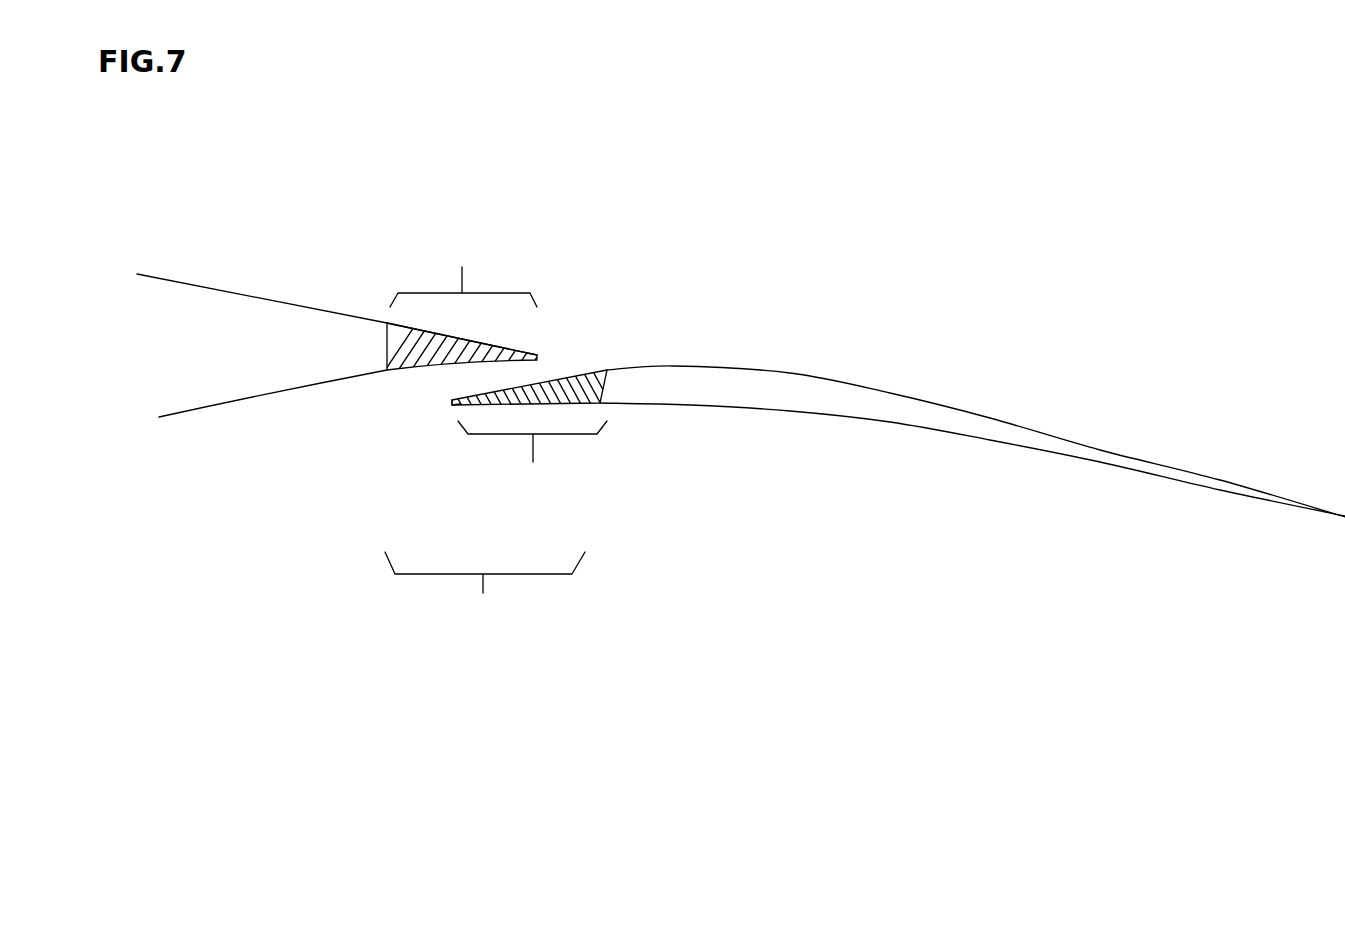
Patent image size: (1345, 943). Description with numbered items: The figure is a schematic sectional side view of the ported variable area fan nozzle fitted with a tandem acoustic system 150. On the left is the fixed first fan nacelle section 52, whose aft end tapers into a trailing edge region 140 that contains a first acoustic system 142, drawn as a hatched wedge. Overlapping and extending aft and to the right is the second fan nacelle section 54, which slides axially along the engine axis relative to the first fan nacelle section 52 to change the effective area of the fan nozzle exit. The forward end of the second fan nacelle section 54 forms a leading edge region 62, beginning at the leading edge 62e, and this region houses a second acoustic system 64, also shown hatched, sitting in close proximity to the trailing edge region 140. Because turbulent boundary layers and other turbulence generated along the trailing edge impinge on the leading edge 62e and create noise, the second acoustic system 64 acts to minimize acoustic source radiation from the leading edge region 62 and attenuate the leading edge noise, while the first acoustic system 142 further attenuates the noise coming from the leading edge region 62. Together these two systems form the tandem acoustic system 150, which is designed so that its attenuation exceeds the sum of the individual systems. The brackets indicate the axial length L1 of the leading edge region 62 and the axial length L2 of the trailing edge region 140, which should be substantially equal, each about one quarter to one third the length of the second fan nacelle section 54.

The first fan nacelle section 52 is at (183, 281).
The second fan nacelle section 54 is at (760, 427).
The leading edge region 62 is at (539, 386).
The leading edge 62e is at (450, 409).
The second acoustic system 64 is at (549, 405).
The trailing edge region 140 is at (428, 325).
The first acoustic system 142 is at (467, 338).
The tandem acoustic system 150 is at (485, 588).
The axial length of the leading edge region L1 is at (532, 459).
The axial length of the trailing edge region L2 is at (463, 271).